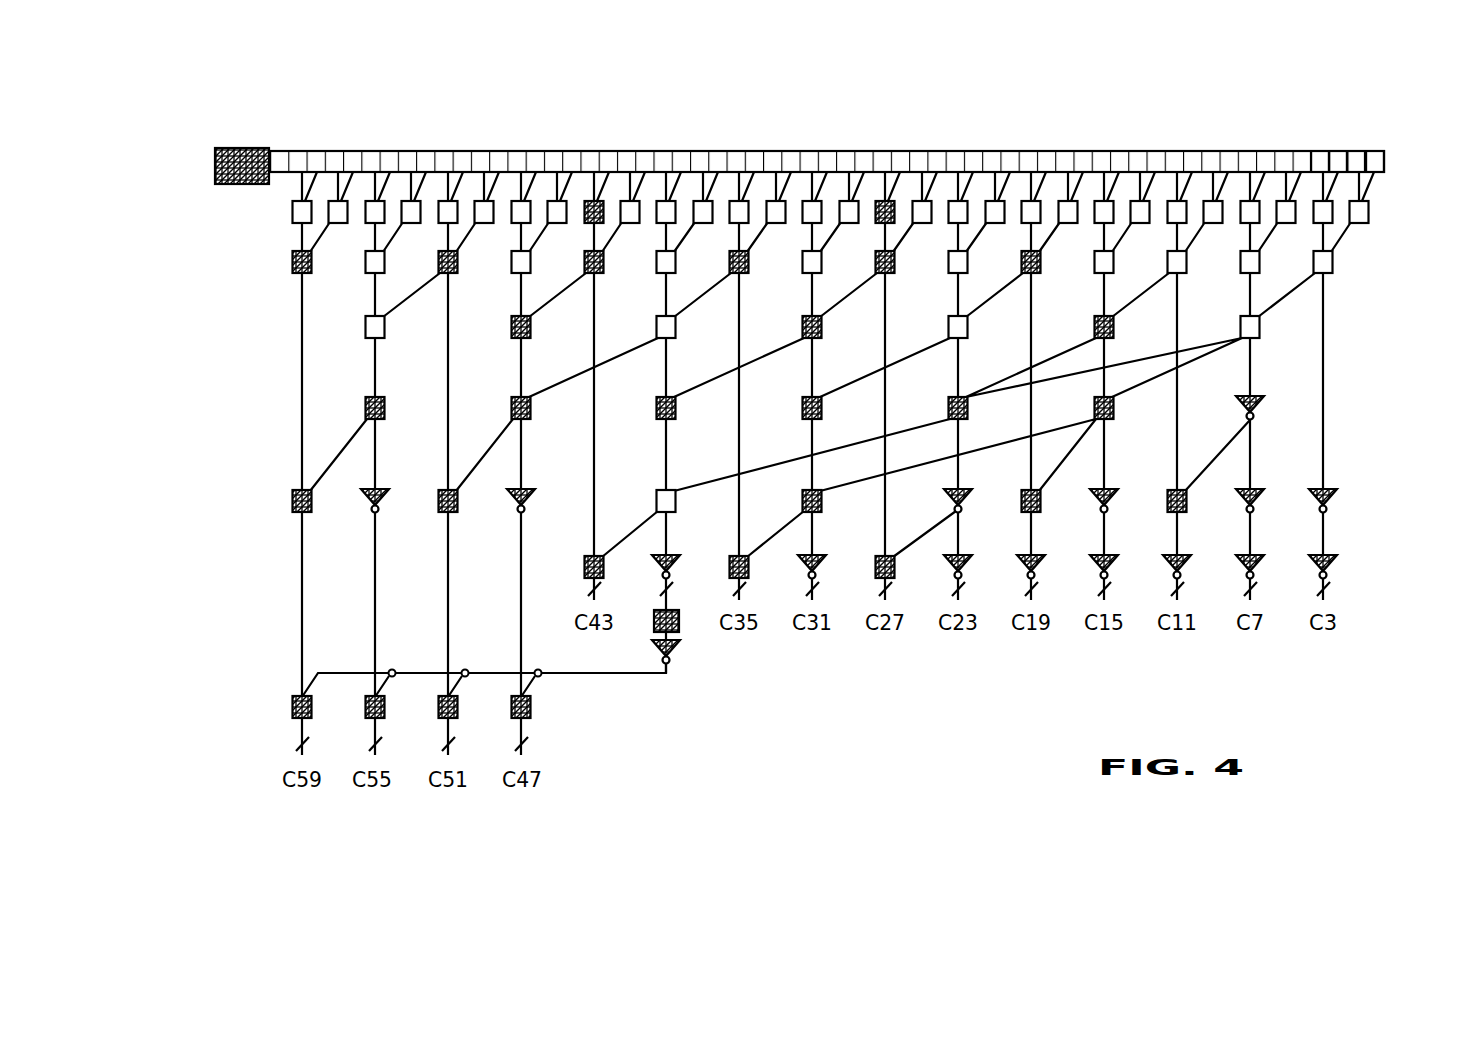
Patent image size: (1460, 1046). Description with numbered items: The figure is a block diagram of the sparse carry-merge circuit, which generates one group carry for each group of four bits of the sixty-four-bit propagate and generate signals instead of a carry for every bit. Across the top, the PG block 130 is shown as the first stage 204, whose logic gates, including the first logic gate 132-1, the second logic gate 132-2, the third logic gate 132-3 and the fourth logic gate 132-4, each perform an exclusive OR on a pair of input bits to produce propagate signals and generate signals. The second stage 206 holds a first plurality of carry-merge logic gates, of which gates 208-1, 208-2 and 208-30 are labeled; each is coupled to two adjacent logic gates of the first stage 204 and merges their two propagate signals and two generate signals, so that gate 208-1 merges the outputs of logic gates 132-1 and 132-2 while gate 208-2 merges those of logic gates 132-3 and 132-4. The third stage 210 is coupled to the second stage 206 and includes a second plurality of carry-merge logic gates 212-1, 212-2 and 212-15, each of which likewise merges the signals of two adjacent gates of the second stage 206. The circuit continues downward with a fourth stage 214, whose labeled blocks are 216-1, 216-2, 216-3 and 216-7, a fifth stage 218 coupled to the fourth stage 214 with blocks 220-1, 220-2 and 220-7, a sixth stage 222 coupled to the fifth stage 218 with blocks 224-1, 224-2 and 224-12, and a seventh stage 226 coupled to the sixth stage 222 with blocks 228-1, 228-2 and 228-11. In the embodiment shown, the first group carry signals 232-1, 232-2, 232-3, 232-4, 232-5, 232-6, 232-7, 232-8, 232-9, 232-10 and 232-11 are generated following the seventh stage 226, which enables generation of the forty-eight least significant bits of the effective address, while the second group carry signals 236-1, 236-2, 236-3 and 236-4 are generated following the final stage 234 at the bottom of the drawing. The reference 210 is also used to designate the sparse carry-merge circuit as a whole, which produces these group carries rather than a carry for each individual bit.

The PG block 130 is at (225, 148).
The first logic gate 132-1 is at (1377, 151).
The second logic gate 132-2 is at (1354, 151).
The third logic gate 132-3 is at (1338, 151).
The fourth logic gate 132-4 is at (1320, 151).
The first stage 204 is at (781, 131).
The second stage 206 is at (769, 238).
The first carry-merge logic gate 208-30 is at (293, 216).
The first carry-merge logic gate 208-2 is at (1333, 224).
The first carry-merge logic gate 208-1 is at (1369, 215).
The third stage 210 is at (1289, 704).
The second carry-merge logic gate 212-15 is at (311, 268).
The second carry-merge logic gate 212-2 is at (1241, 272).
The second carry-merge logic gate 212-1 is at (1333, 268).
The fourth stage 214 is at (716, 344).
The switch element of row CM3 216-7 is at (366, 335).
The switch element of row CM3 216-3 is at (967, 322).
The switch element of row CM3 216-2 is at (1113, 322).
The switch element of row CM3 216-1 is at (1259, 322).
The fifth stage 218 is at (716, 401).
The switch element of row CM4 220-7 is at (377, 397).
The switch element of row CM4 220-2 is at (1113, 413).
The switch element of row CM4 220-1 is at (1277, 377).
The sixth stage 222 is at (754, 498).
The switch element of row CM5 224-12 is at (311, 506).
The switch element of row CM5 224-2 is at (1258, 489).
The switch element of row CM5 224-1 is at (1330, 489).
The seventh stage 226 is at (754, 549).
The switch element of row CM6 228-11 is at (585, 557).
The switch element of row CM6 228-2 is at (1272, 546).
The switch element of row CM6 228-1 is at (1345, 546).
The first group carry signal 232-11 is at (621, 590).
The first group carry signal 232-10 is at (694, 590).
The first group carry signal 232-9 is at (763, 590).
The first group carry signal 232-8 is at (836, 590).
The first group carry signal 232-7 is at (909, 590).
The first group carry signal 232-6 is at (982, 590).
The first group carry signal 232-5 is at (1055, 590).
The first group carry signal 232-4 is at (1128, 590).
The first group carry signal 232-3 is at (1201, 590).
The first group carry signal 232-2 is at (1274, 590).
The first group carry signal 232-1 is at (1347, 590).
The final stage 234 is at (325, 709).
The second group carry signal 236-4 is at (326, 745).
The second group carry signal 236-3 is at (399, 745).
The second group carry signal 236-2 is at (473, 745).
The second group carry signal 236-1 is at (549, 745).